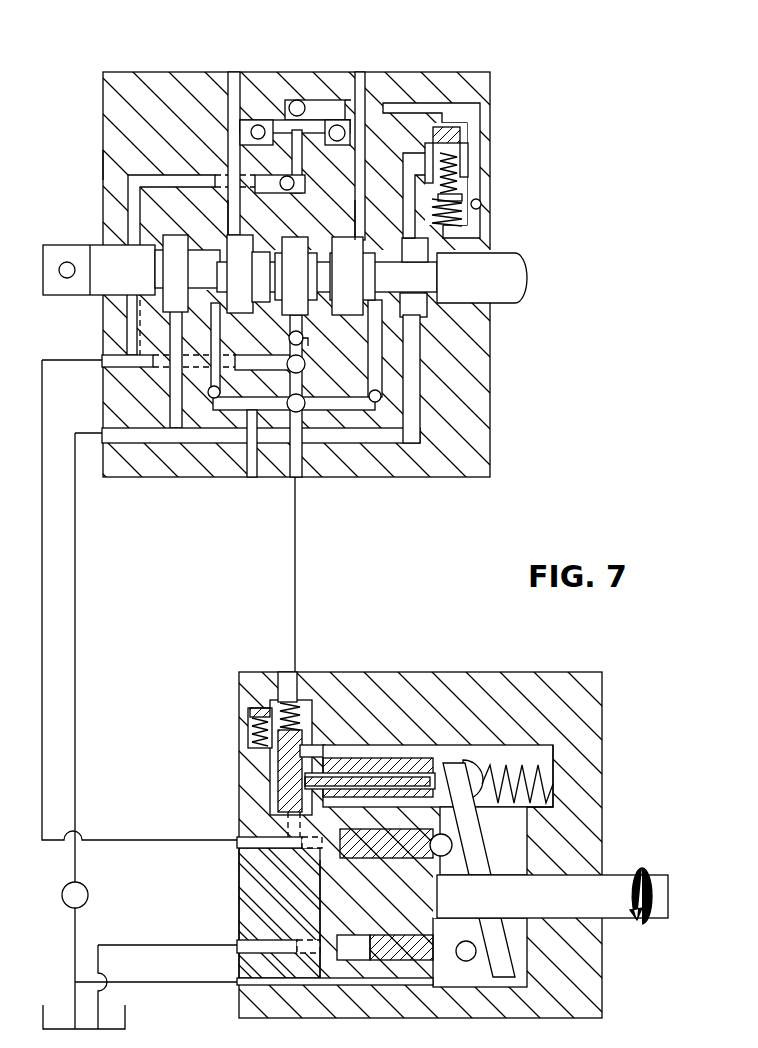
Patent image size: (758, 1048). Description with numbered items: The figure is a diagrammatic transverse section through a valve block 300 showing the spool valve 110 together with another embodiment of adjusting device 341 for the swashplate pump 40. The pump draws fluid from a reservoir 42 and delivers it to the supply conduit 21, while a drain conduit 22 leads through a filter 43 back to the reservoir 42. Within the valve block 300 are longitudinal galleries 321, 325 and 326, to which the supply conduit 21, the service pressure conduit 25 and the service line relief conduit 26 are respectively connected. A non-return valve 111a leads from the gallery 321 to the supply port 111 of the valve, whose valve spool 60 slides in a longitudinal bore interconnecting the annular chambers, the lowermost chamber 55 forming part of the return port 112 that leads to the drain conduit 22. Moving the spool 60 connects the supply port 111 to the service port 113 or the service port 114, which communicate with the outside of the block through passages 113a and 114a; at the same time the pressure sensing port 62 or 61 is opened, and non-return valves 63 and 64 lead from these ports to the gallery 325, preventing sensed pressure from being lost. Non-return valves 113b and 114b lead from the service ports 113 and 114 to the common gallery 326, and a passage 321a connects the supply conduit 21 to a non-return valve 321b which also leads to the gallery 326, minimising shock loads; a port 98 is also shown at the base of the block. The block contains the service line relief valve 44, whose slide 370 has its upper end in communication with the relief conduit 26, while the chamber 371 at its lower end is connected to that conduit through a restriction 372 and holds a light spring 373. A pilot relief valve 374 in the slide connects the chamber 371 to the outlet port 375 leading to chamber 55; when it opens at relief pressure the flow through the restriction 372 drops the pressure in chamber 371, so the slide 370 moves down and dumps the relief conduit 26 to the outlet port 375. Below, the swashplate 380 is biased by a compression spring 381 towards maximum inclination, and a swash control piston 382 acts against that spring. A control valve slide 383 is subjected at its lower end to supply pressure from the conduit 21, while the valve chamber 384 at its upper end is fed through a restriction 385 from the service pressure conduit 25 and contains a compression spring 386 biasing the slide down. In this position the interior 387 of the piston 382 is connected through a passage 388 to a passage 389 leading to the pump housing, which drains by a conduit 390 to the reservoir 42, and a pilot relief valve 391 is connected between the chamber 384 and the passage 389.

The three-position control valve 110 is at (100, 65).
The valve block 300 is at (103, 163).
The passage 114a is at (236, 72).
The passage 113a is at (358, 72).
The common gallery 326 is at (297, 99).
The non-return valve 321b is at (282, 177).
The non-return valve 114b is at (258, 124).
The non-return valve 113b is at (337, 142).
The passage 321a is at (178, 175).
The return port 112 is at (137, 320).
The pressure sensing port 62 is at (212, 316).
The pressure sensing port 61 is at (376, 322).
The port 98 is at (252, 477).
The supply port 111 is at (289, 339).
The non-return valve 111a is at (306, 344).
The gallery 321 is at (306, 368).
The gallery 325 is at (305, 408).
The non-return valve 63 is at (380, 394).
The non-return valve 64 is at (211, 396).
The valve spool 60 is at (480, 285).
The valve chamber 55 is at (426, 260).
The service port 114 is at (240, 219).
The service port 113 is at (354, 235).
The service line relief conduit 26 is at (432, 103).
The light compression spring 373 is at (403, 206).
The slide 370 is at (460, 133).
The valve outlet port 375 is at (469, 162).
The pilot relief valve 374 is at (460, 188).
The service line relief valve 44 is at (472, 205).
The restriction 372 is at (481, 208).
The chamber 371 is at (455, 222).
The supply conduit 21 is at (68, 360).
The drain conduit 22 is at (76, 598).
The filter 43 is at (88, 895).
The reservoir 42 is at (57, 1028).
The conduit 390 is at (185, 983).
The service pressure conduit 25 is at (296, 523).
The swashplate pump 40 is at (447, 664).
The restriction 385 is at (282, 675).
The compression spring 386 is at (253, 706).
The pilot relief valve 391 is at (252, 726).
The valve chamber 384 is at (300, 712).
The control valve slide 383 is at (278, 775).
The adjusting device 341 is at (278, 796).
The passage 389 is at (312, 746).
The swash control piston 382 is at (388, 745).
The passage 388 is at (348, 778).
The interior of the piston 387 is at (446, 748).
The swashplate 380 is at (480, 834).
The compression spring 381 is at (515, 768).